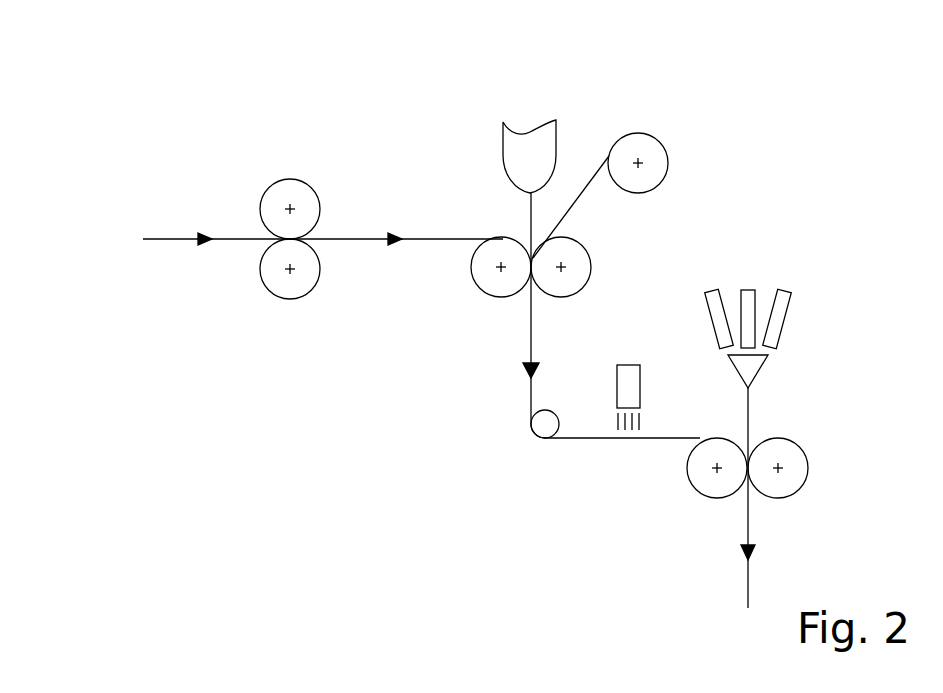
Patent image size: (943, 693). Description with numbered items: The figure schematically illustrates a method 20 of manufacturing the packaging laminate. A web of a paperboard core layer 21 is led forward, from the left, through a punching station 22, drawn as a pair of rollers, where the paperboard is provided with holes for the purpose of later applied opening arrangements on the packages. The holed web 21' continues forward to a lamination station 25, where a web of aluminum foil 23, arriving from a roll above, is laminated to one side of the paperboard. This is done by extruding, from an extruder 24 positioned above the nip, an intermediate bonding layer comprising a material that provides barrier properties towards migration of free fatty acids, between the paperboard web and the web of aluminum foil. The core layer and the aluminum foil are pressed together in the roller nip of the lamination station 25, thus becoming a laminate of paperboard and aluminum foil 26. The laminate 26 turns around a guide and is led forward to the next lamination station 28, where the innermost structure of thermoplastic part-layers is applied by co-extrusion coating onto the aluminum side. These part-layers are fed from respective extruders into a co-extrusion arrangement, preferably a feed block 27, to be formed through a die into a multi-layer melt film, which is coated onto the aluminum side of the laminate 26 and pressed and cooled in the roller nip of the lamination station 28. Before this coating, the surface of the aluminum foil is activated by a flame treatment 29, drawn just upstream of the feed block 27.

The method of manufacturing 20 is at (127, 242).
The web of a paperboard core layer 21 is at (234, 270).
The holed web 21' is at (411, 267).
The punching station 22 is at (285, 188).
The web of aluminum foil 23 is at (533, 254).
The extruder 24 is at (518, 154).
The lamination station 25 is at (580, 273).
The laminate of paperboard and aluminum foil 26 is at (533, 392).
The feed block 27 is at (750, 408).
The lamination station 28 is at (798, 469).
The flame treatment 29 is at (632, 390).